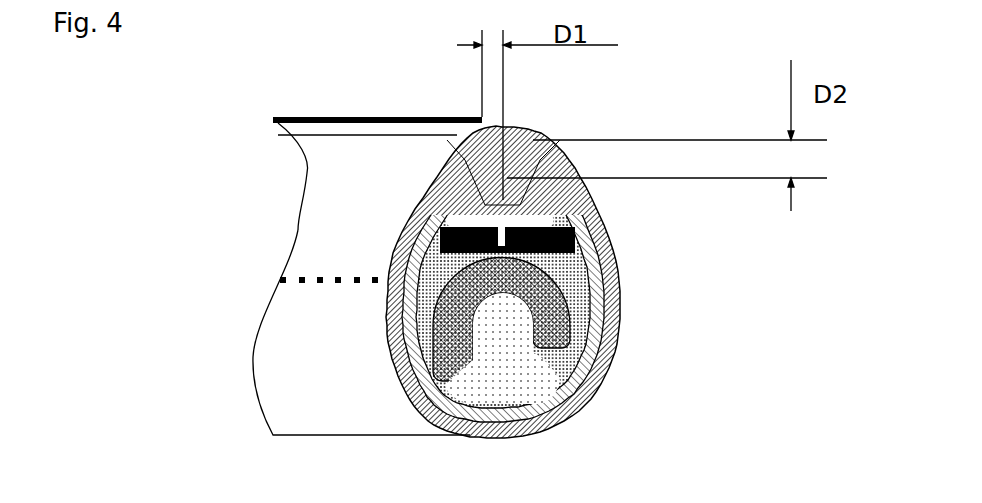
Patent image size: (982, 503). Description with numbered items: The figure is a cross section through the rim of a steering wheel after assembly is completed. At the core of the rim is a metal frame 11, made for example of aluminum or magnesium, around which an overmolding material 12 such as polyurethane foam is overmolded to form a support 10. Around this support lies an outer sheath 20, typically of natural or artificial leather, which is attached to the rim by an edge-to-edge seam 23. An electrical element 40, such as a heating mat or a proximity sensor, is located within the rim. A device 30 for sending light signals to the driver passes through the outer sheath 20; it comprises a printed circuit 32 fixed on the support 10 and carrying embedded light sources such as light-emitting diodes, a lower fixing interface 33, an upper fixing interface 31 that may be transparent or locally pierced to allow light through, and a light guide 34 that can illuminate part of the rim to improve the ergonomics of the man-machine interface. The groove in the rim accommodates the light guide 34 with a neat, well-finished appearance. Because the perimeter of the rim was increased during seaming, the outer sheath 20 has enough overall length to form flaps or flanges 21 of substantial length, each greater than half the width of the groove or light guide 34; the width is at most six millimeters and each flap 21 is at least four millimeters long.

The support 10 is at (767, 343).
The frame 11 is at (560, 323).
The overmolding material 12 is at (555, 362).
The outer sheath 20 is at (530, 417).
The flap 21 is at (505, 202).
The edge-to-edge seam 23 is at (353, 281).
The device 30 is at (173, 90).
The upper fixing interface 31 is at (470, 197).
The printed circuit 32 is at (463, 227).
The lower fixing interface 33 is at (427, 240).
The light guide 34 is at (338, 132).
The electrical element 40 is at (527, 245).